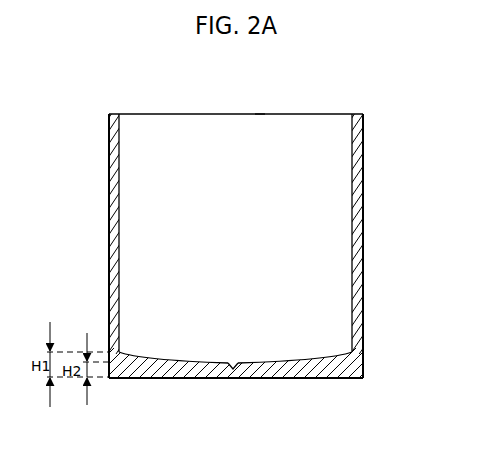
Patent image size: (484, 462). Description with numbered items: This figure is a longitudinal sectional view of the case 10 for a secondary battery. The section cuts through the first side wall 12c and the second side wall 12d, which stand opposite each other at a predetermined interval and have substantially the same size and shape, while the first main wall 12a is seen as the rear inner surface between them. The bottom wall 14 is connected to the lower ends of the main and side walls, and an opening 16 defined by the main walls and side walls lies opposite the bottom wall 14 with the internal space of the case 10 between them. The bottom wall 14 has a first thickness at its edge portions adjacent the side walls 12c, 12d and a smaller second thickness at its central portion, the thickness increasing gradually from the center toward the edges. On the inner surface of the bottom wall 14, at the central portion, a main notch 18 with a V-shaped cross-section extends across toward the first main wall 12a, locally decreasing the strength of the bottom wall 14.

The case 10 is at (103, 93).
The first main wall 12a is at (194, 127).
The first side wall 12c is at (358, 233).
The second side wall 12d is at (115, 240).
The bottom wall 14 is at (296, 379).
The opening 16 is at (260, 113).
The main notch 18 is at (229, 379).